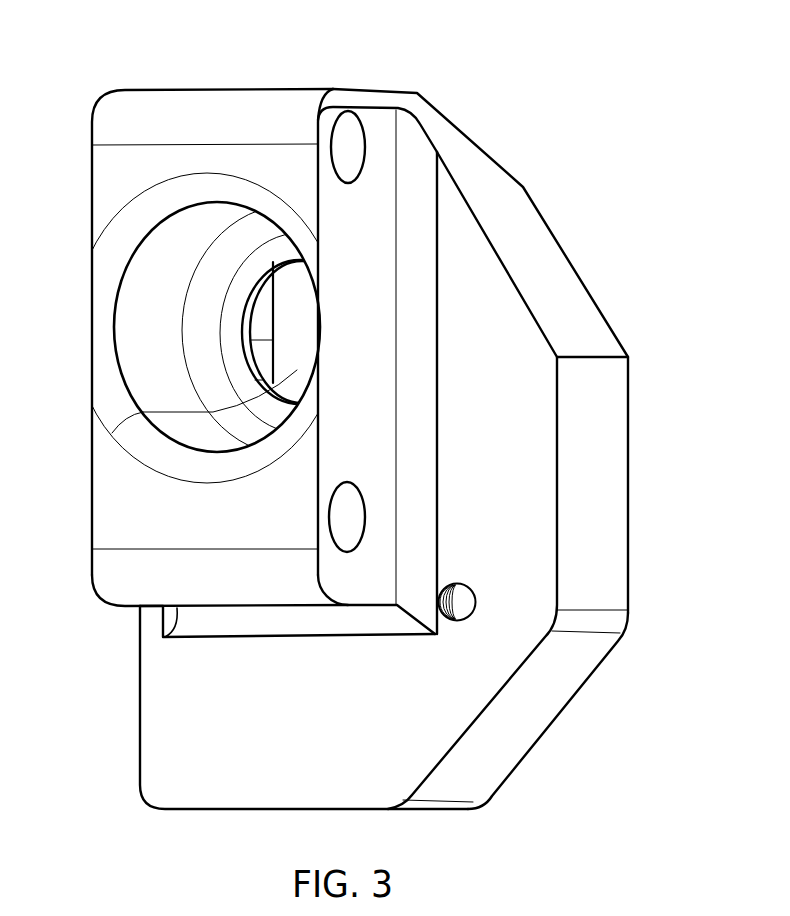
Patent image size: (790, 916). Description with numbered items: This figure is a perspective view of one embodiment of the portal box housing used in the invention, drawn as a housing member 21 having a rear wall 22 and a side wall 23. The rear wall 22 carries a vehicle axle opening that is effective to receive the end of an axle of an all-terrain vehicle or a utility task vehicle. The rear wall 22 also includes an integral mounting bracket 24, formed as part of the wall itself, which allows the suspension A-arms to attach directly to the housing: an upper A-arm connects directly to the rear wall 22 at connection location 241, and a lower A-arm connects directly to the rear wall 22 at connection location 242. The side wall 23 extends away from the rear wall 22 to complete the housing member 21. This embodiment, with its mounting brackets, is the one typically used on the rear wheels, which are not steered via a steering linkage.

The housing member 21 is at (664, 67).
The rear wall 22 is at (152, 705).
The side wall 23 is at (577, 303).
The integral mounting bracket 24 is at (107, 523).
The connection location 241 is at (347, 143).
The connection location 242 is at (352, 527).